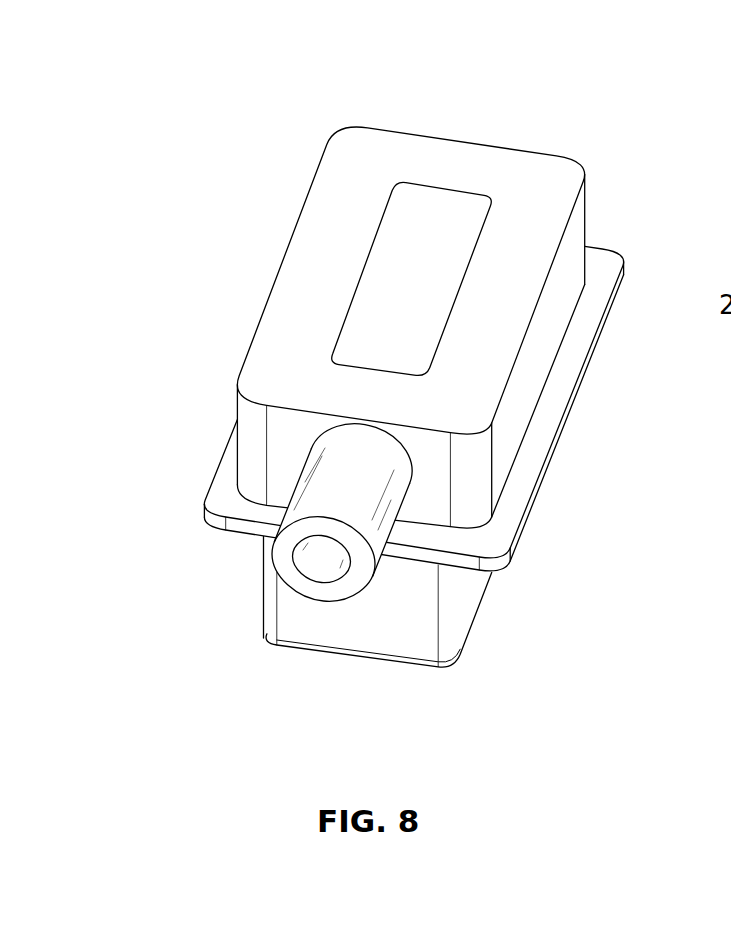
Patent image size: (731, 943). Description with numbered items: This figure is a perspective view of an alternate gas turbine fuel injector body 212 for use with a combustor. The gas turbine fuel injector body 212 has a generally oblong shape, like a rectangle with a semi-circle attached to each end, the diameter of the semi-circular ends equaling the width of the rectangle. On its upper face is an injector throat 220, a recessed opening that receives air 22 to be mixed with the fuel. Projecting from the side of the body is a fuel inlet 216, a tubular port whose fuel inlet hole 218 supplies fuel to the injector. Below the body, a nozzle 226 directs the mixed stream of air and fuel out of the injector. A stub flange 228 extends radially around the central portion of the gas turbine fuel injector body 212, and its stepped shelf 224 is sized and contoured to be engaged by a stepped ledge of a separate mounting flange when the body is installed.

The gas turbine fuel injector body 212 is at (418, 379).
The air 22 is at (421, 222).
The injector throat 220 is at (393, 217).
The fuel inlet 216 is at (288, 521).
The fuel inlet hole 218 is at (328, 558).
The stepped shelf 224 is at (397, 392).
The nozzle 226 is at (280, 617).
The stub flange 228 is at (215, 528).